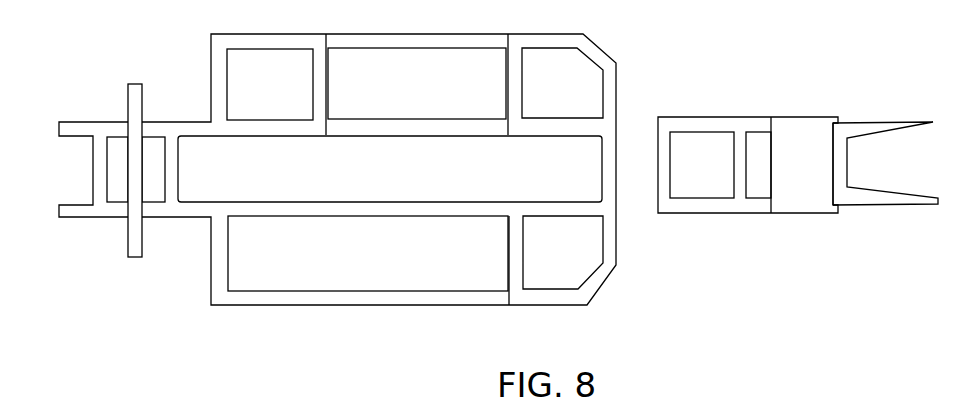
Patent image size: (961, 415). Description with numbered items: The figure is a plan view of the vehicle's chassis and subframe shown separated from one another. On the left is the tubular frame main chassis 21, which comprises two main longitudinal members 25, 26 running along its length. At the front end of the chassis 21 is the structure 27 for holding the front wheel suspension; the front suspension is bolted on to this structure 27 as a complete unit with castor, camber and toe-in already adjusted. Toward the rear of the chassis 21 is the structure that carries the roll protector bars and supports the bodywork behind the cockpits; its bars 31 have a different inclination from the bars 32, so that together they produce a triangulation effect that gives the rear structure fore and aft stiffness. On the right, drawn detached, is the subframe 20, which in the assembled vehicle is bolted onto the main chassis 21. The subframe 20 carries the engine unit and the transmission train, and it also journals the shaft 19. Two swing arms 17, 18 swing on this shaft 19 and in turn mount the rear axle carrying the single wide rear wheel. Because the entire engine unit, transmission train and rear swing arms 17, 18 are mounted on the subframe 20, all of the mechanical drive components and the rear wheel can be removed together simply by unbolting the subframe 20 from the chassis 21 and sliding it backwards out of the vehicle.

The main chassis 21 is at (609, 47).
The main longitudinal member 25 is at (425, 128).
The main longitudinal member 26 is at (352, 210).
The bar 31 is at (555, 128).
The bar 32 is at (565, 297).
The structure for holding the front wheel suspension 27 is at (123, 231).
The subframe 20 is at (711, 205).
The shaft 19 is at (838, 120).
The swing arm 18 is at (882, 125).
The swing arm 17 is at (891, 198).